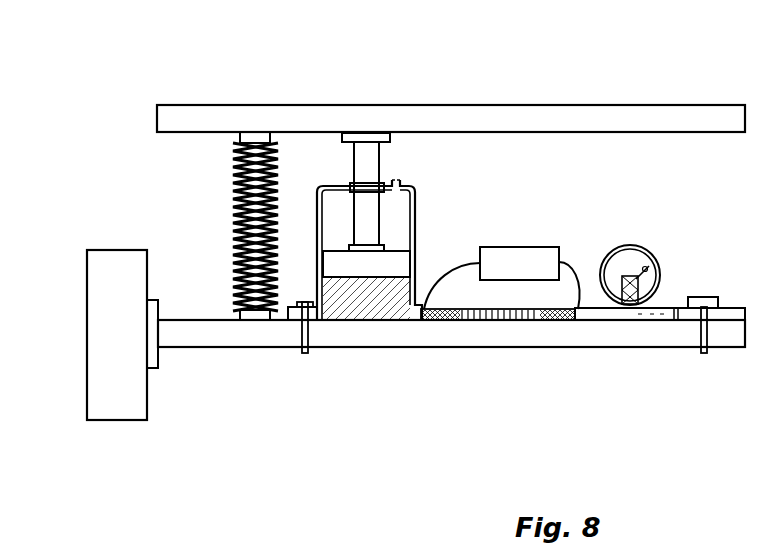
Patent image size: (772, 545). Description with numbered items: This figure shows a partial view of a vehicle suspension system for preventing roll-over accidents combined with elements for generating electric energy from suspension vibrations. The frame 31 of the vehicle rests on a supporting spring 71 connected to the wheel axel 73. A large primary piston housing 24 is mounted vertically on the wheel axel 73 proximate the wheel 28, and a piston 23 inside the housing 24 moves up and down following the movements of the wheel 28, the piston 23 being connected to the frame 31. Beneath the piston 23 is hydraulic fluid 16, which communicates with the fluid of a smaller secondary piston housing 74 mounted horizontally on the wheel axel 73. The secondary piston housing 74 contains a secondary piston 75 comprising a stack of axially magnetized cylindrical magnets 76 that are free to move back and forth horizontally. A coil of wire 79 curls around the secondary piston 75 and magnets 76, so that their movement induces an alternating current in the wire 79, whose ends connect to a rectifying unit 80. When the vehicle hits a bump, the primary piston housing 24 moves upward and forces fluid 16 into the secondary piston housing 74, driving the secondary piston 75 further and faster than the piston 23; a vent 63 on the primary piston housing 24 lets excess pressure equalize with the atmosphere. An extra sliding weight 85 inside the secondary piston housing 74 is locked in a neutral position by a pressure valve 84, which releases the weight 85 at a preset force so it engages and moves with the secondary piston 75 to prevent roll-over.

The frame 31 is at (510, 105).
The supporting spring 71 is at (232, 178).
The wheel 28 is at (86, 333).
The wheel axel 73 is at (230, 348).
The primary piston housing 24 is at (417, 200).
The vent 63 is at (403, 185).
The piston 23 is at (335, 251).
The hydraulic fluid 16 is at (358, 313).
The secondary piston housing 74 is at (507, 306).
The secondary piston 75 is at (452, 322).
The axially magnetized cylindrical magnets 76 is at (500, 322).
The rectifying unit 80 is at (530, 274).
The coil of wire 79 is at (578, 262).
The pressure valve 84 is at (656, 260).
The sliding weight 85 is at (647, 322).